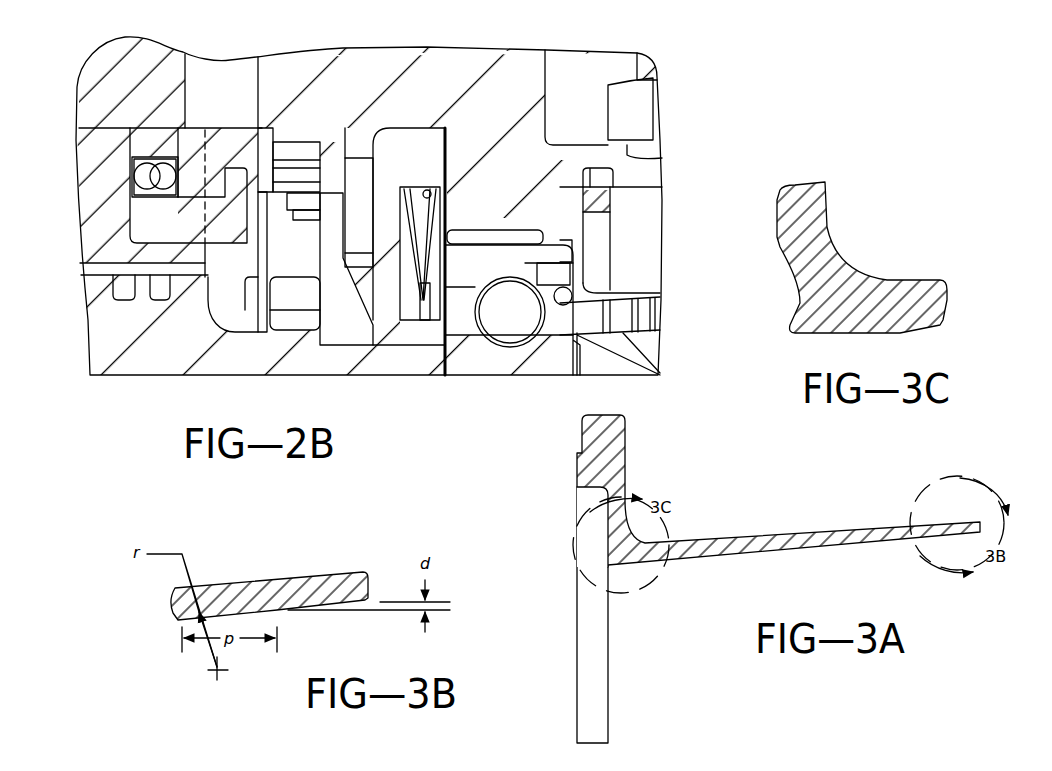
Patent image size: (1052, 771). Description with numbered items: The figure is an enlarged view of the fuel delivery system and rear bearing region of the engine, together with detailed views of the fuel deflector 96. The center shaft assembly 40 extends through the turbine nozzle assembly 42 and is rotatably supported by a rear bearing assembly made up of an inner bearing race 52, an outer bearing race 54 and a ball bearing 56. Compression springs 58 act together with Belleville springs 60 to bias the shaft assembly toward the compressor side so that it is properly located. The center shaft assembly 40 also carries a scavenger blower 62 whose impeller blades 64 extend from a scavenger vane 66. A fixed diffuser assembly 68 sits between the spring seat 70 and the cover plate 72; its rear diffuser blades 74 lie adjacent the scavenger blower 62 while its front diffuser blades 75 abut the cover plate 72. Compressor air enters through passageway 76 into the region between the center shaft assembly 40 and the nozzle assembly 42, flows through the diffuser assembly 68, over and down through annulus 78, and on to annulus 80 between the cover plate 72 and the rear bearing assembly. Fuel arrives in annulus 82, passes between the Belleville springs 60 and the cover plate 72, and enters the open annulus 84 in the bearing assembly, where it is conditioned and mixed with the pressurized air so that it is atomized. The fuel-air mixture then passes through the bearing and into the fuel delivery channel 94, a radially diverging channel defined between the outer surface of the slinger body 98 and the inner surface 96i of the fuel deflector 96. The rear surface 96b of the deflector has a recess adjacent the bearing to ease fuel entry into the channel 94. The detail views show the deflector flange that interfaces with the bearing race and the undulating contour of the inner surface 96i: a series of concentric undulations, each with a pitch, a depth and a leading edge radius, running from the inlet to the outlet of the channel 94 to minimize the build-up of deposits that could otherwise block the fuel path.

In FIG. 2B, the center shaft assembly 40 is at (84, 336).
In FIG. 2B, the turbine nozzle assembly 42 is at (394, 74).
In FIG. 2B, the inner bearing race 52 is at (485, 279).
In FIG. 2B, the outer bearing race 54 is at (557, 364).
In FIG. 2B, the ball bearing 56 is at (517, 321).
In FIG. 2B, the compression springs 58 is at (142, 178).
In FIG. 2B, the Belleville springs 60 is at (437, 217).
In FIG. 2B, the scavenger blower 62 is at (326, 180).
In FIG. 2B, the impeller blades 64 is at (272, 226).
In FIG. 2B, the scavenger vane 66 is at (295, 265).
In FIG. 2B, the fixed diffuser assembly 68 is at (285, 126).
In FIG. 2B, the spring seat 70 is at (172, 228).
In FIG. 2B, the cover plate 72 is at (426, 171).
In FIG. 2B, the rear diffuser blades 74 is at (263, 138).
In FIG. 2B, the front diffuser blades 75 is at (362, 172).
In FIG. 2B, the passageway 76 is at (232, 68).
In FIG. 2B, the annulus 78 is at (368, 296).
In FIG. 2B, the annulus 80 is at (383, 323).
In FIG. 2B, the annulus 82 is at (454, 241).
In FIG. 2B, the open annulus 84 is at (458, 307).
In FIG. 2B, the fuel delivery channel 94 is at (644, 316).
In FIG. 2B, the fuel deflector 96 is at (628, 296).
In FIG. 3C, the fuel deflector 96 is at (863, 283).
In FIG. 3A, the fuel deflector 96 is at (744, 540).
In FIG. 3B, the fuel deflector 96 is at (282, 581).
In FIG. 3C, the rear surface 96b is at (777, 220).
In FIG. 3A, the rear surface 96b is at (612, 515).
In FIG. 3A, the inner surface 96i is at (801, 556).
In FIG. 2B, the slinger body 98 is at (648, 352).